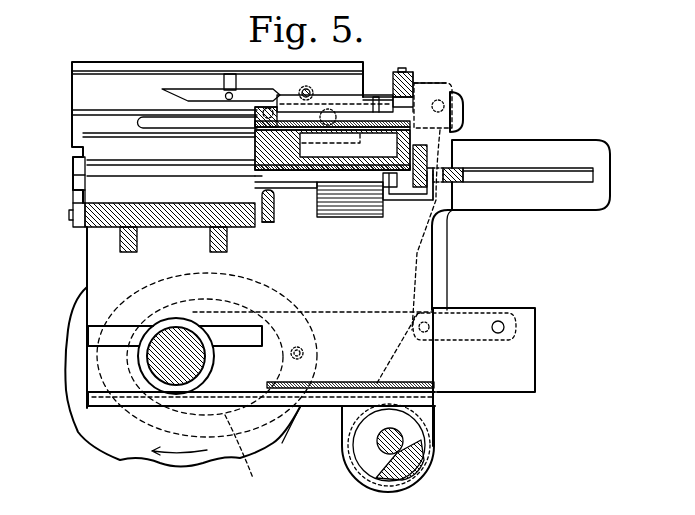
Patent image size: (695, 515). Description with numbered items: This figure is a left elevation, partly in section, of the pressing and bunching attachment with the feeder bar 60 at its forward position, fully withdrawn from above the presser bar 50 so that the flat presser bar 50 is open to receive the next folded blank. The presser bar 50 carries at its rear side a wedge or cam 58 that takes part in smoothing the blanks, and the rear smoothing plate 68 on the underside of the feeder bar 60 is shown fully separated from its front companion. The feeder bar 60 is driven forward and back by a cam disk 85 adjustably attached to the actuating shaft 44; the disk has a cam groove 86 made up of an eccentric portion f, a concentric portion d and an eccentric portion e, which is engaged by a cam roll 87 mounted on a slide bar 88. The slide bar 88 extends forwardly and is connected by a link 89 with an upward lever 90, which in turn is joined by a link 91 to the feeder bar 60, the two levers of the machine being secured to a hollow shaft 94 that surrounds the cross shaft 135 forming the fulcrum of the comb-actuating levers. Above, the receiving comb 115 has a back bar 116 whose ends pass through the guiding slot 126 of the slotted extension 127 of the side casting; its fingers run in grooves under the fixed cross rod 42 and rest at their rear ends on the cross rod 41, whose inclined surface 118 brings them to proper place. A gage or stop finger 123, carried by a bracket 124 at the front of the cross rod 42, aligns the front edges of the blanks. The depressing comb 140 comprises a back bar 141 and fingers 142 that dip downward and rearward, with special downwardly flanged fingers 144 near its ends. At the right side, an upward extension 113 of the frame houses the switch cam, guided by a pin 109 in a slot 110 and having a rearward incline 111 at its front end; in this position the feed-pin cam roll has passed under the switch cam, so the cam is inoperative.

The upward extension of the machine frame 113 is at (88, 80).
The slot 110 is at (229, 72).
The pin 109 is at (232, 94).
The rearward incline 111 is at (279, 91).
The downwardly flanged special fingers 144 is at (337, 98).
The depressing comb 140 is at (375, 103).
The back bar 141 is at (402, 72).
The fingers 142 is at (415, 88).
The link 91 is at (442, 82).
The feeder bar 60 is at (443, 128).
The slotted extension 127 is at (567, 145).
The guiding slot 126 is at (567, 173).
The back bar 116 is at (452, 183).
The upward lever 90 is at (440, 252).
The slide bar 88 is at (483, 377).
The link 89 is at (463, 320).
The cam roll 87 is at (307, 347).
The actuating shaft 44 is at (147, 357).
The concentric portion d is at (100, 357).
The eccentric portion f is at (247, 287).
The cam groove 86 is at (251, 455).
The eccentric portion e is at (293, 431).
The cam disk 85 is at (135, 440).
The hollow shaft 94 is at (420, 453).
The cross shaft 135 is at (402, 436).
The presser bar 50 is at (103, 220).
The wedge or cam 58 is at (80, 175).
The smoothing plate 68 is at (257, 177).
The inclined surface 118 is at (268, 190).
The cross rod 41 is at (268, 222).
The receiving comb 115 is at (295, 188).
The gage or stop finger 123 is at (385, 180).
The cross rod 42 is at (415, 190).
The bracket 124 is at (430, 190).